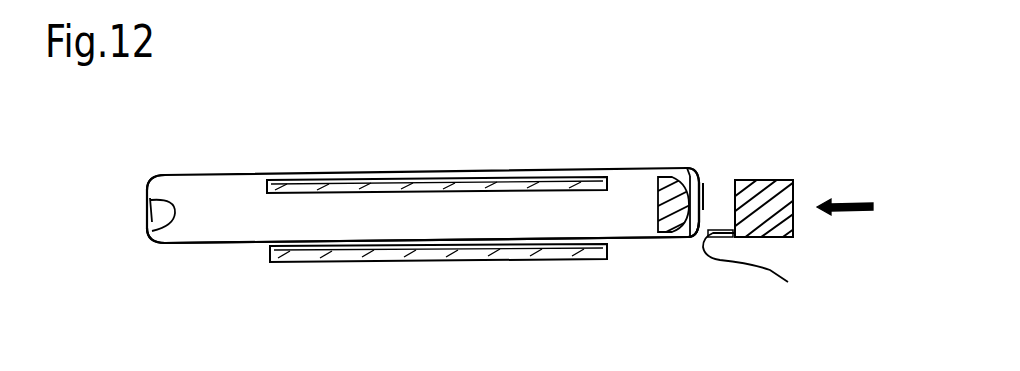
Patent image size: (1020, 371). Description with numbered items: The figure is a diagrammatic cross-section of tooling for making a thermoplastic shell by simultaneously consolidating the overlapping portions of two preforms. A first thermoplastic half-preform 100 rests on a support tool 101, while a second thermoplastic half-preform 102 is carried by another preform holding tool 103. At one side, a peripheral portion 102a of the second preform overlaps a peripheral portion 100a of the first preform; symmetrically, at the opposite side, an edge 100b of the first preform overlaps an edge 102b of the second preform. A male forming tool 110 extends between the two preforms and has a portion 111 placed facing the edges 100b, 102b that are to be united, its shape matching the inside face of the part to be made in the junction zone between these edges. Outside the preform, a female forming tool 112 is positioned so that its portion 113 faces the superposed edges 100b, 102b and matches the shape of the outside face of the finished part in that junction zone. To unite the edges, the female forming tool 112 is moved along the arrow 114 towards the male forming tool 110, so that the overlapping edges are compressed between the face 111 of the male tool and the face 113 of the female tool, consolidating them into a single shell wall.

The first thermoplastic half-preform 100 is at (218, 175).
The peripheral portion of the first preform 100a is at (155, 244).
The edge of the first preform 100b is at (703, 184).
The support tool 101 is at (262, 177).
The second thermoplastic half-preform 102 is at (235, 245).
The peripheral portion of the second preform 102a is at (147, 213).
The edge of the second preform 102b is at (692, 240).
The preform holding tool 103 is at (432, 262).
The male forming tool 110 is at (658, 222).
The portion of the male forming tool 111 is at (690, 168).
The female forming tool 112 is at (782, 180).
The portion of the female forming tool 113 is at (764, 274).
The arrow 114 is at (857, 211).